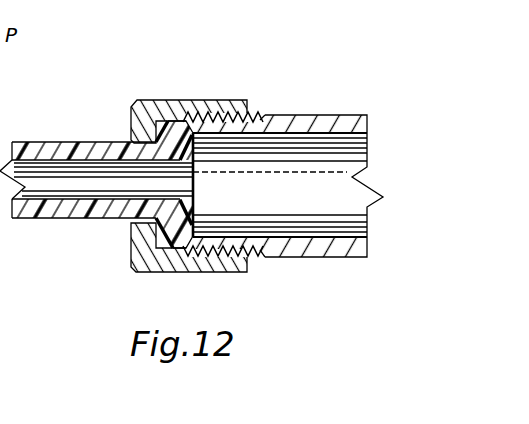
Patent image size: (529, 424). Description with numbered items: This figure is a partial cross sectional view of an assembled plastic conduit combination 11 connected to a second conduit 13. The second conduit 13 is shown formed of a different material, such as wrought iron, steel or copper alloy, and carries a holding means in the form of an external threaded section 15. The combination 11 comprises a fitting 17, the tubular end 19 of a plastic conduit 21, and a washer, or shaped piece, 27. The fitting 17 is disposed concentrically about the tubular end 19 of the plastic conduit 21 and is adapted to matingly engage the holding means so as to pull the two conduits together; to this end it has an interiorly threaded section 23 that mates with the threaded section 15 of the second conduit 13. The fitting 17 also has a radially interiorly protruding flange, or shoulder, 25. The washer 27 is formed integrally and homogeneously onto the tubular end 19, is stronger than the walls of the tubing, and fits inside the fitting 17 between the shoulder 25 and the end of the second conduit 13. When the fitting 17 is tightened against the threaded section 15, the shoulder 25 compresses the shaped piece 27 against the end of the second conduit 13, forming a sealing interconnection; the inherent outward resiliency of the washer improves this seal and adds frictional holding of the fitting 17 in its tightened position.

The plastic conduit combination 11 is at (60, 112).
The second conduit 13 is at (285, 115).
The threaded section 15 is at (208, 112).
The fitting 17 is at (150, 100).
The tubular end 19 is at (132, 212).
The plastic conduit 21 is at (40, 212).
The interiorly threaded section 23 is at (244, 246).
The flange 25 is at (128, 148).
The washer 27 is at (170, 234).